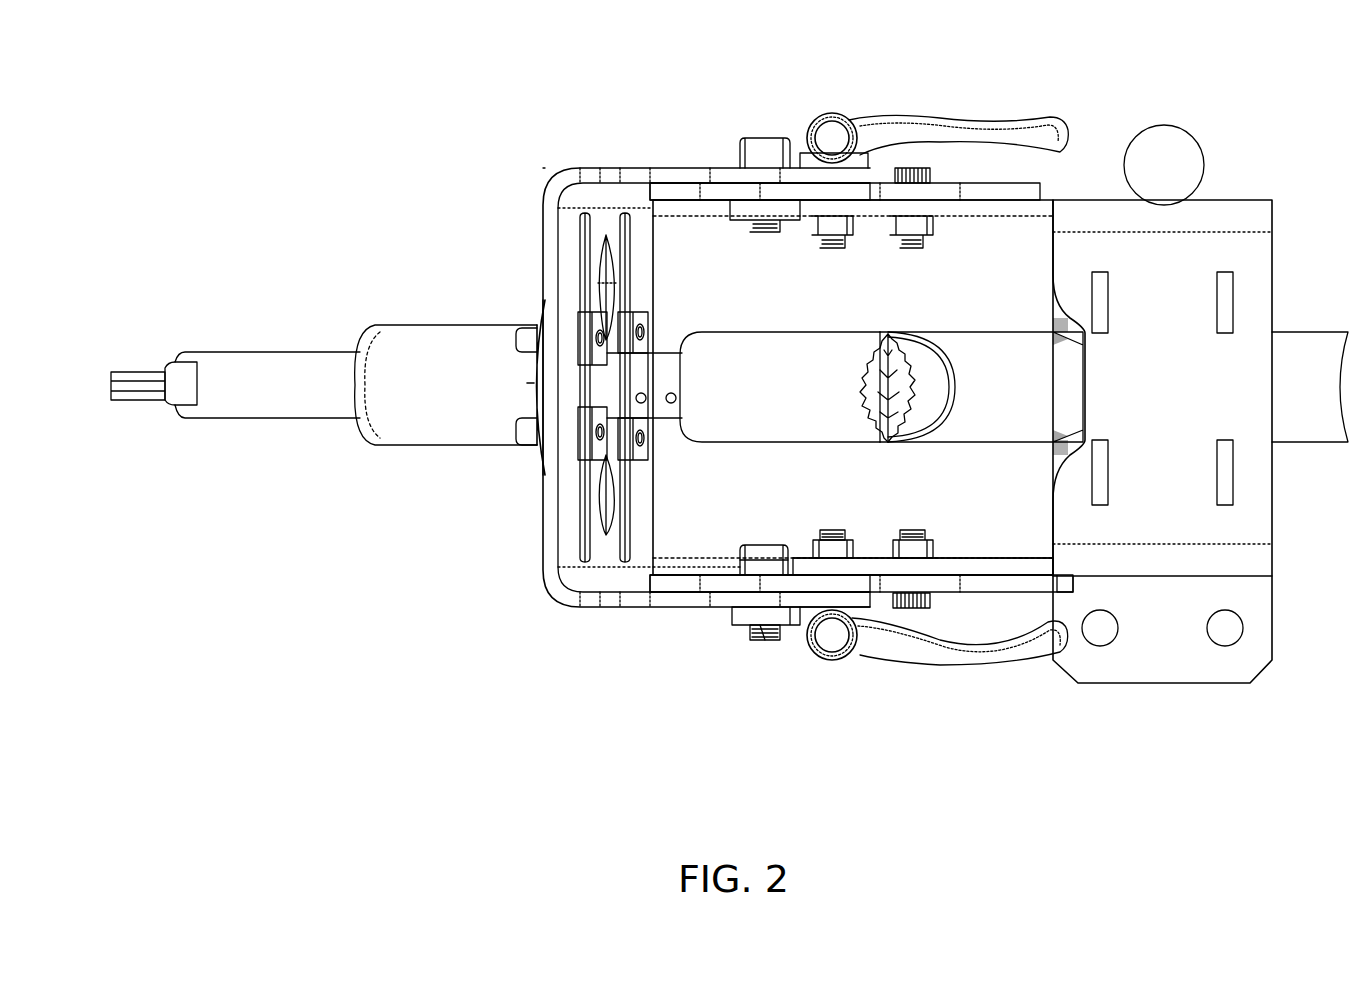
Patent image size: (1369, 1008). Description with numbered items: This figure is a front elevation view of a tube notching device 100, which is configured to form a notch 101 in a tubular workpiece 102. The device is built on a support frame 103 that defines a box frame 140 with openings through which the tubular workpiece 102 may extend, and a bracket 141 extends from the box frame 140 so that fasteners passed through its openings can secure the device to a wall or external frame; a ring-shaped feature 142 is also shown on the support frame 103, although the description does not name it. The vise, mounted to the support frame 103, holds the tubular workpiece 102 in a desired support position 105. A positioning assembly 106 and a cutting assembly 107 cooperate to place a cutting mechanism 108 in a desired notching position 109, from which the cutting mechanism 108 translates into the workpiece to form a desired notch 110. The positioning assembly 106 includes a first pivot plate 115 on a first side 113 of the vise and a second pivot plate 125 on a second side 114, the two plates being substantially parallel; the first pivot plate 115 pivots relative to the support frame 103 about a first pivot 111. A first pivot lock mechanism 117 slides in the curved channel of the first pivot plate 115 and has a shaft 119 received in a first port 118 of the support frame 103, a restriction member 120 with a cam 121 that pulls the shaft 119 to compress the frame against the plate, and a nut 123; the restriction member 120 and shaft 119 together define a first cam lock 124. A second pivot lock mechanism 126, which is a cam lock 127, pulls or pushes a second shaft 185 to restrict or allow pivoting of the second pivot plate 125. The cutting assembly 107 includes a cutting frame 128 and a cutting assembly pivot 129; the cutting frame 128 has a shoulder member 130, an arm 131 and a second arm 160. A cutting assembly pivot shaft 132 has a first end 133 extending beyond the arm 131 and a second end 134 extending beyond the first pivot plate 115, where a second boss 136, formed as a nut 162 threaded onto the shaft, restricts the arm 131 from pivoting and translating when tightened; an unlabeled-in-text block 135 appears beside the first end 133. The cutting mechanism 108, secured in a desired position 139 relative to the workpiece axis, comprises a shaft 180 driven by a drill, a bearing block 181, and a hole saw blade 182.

The tube notching device 100 is at (540, 100).
The notch 101 is at (908, 336).
The tubular workpiece 102 is at (985, 345).
The support frame 103 is at (1298, 196).
The desired support position 105 is at (1020, 462).
The positioning assembly 106 is at (926, 100).
The cutting assembly 107 is at (515, 270).
The cutting mechanism 108 is at (312, 270).
The desired notching position 109 is at (935, 452).
The desired notch 110 is at (968, 392).
The first pivot 111 is at (952, 556).
The first side 113 is at (698, 690).
The second side 114 is at (733, 96).
The first pivot plate 115 is at (962, 580).
The first pivot lock mechanism 117 is at (843, 680).
The first port 118 is at (846, 557).
The shaft 119 is at (830, 535).
The restriction member 120 is at (970, 652).
The cam 121 is at (884, 672).
The nut 123 is at (815, 552).
The first cam lock 124 is at (846, 700).
The second pivot plate 125 is at (970, 192).
The second pivot lock mechanism 126 is at (832, 86).
The cam lock 127 is at (800, 113).
The cutting frame 128 is at (530, 196).
The cutting assembly pivot 129 is at (698, 552).
The shoulder member 130 is at (645, 258).
The arm 131 is at (622, 600).
The cutting assembly pivot shaft 132 is at (750, 643).
The first end 133 is at (758, 545).
The second end 134 is at (768, 642).
The block base 135 is at (750, 558).
The second boss 136 is at (735, 613).
The desired position 139 is at (660, 437).
The box frame 140 is at (1284, 525).
The bracket 141 is at (1255, 632).
The ring 142 is at (1175, 150).
The second arm 160 is at (630, 175).
The nut 162 is at (740, 628).
The shaft 180 is at (215, 362).
The bearing block 181 is at (432, 432).
The hole saw blade 182 is at (780, 336).
The second shaft 185 is at (838, 240).